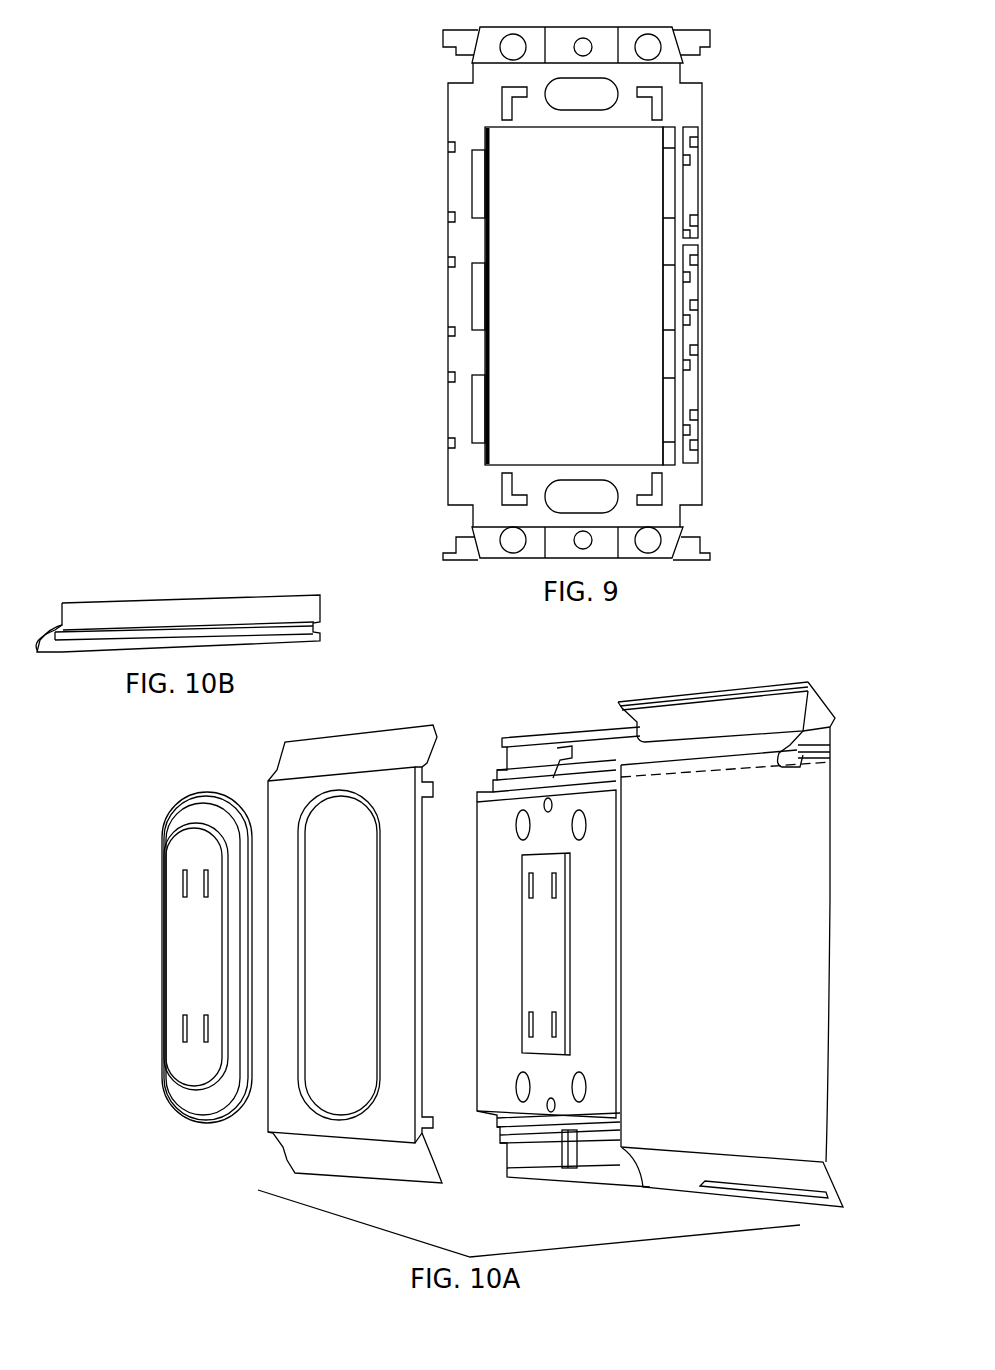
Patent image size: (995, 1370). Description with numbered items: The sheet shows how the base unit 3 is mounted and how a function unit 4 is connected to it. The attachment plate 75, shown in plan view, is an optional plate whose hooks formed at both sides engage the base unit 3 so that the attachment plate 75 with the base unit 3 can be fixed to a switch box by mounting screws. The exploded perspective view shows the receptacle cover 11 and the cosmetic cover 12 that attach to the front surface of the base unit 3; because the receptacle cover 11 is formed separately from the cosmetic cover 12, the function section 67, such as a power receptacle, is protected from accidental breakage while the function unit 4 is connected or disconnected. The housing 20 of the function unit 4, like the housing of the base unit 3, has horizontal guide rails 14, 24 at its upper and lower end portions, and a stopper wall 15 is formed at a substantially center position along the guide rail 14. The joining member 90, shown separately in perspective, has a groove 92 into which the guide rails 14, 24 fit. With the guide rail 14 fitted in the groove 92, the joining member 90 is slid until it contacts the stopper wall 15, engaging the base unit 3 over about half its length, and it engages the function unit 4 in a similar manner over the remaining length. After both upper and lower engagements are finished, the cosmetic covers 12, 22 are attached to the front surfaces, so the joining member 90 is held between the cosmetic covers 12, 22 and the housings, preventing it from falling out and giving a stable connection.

In FIG. 10A, the base unit 3 is at (498, 1020).
In FIG. 10A, the function unit 4 is at (772, 945).
In FIG. 10A, the receptacle cover 11 is at (180, 963).
In FIG. 10A, the cosmetic cover 12 is at (293, 807).
In FIG. 10A, the guide rail 14 is at (538, 772).
In FIG. 10A, the stopper wall 15 is at (567, 747).
In FIG. 10A, the housing 20 is at (813, 733).
In FIG. 10A, the cosmetic cover 22 is at (700, 1112).
In FIG. 10A, the guide rail 24 is at (818, 755).
In FIG. 10A, the function section 67 is at (542, 930).
In FIG. 9, the attachment plate 75 is at (468, 248).
In FIG. 10B, the joining member 90 is at (212, 612).
In FIG. 10A, the joining member 90 is at (620, 757).
In FIG. 10B, the groove 92 is at (128, 633).